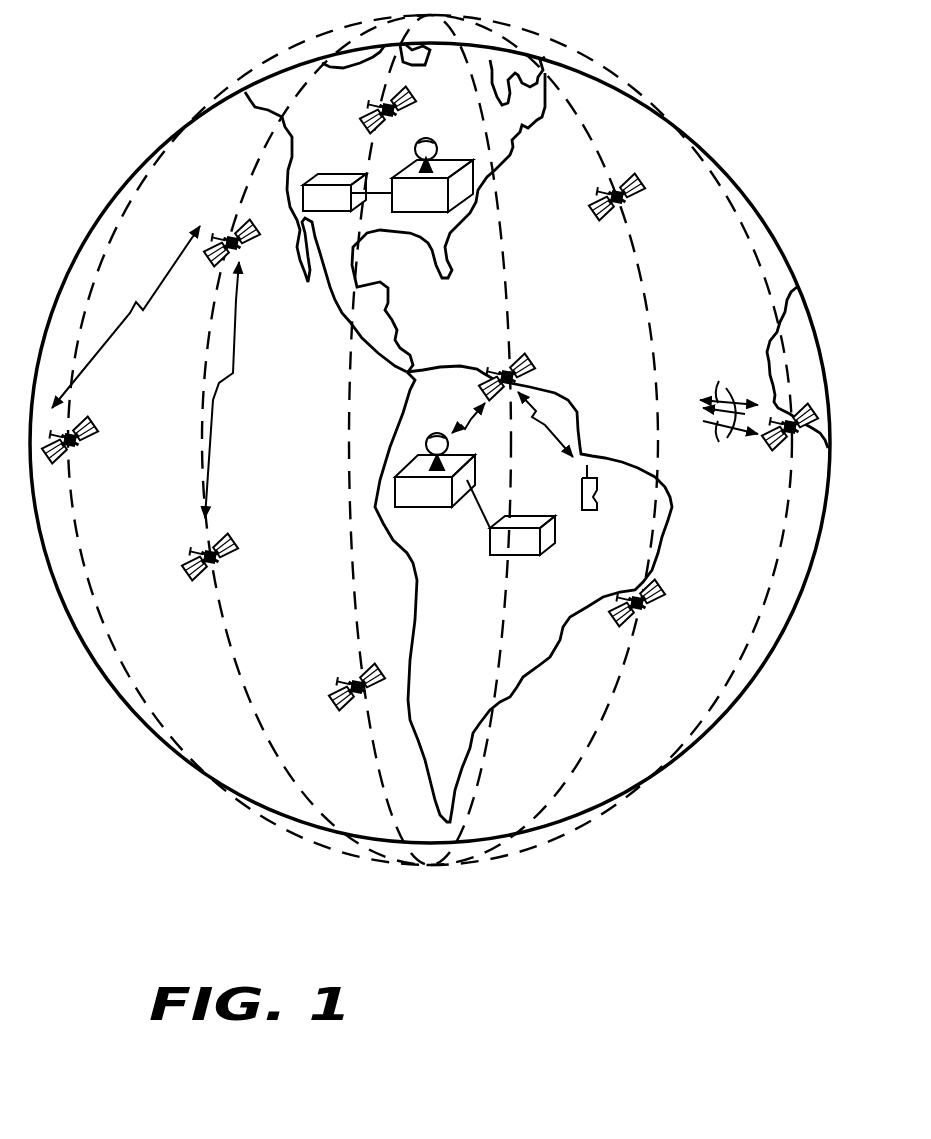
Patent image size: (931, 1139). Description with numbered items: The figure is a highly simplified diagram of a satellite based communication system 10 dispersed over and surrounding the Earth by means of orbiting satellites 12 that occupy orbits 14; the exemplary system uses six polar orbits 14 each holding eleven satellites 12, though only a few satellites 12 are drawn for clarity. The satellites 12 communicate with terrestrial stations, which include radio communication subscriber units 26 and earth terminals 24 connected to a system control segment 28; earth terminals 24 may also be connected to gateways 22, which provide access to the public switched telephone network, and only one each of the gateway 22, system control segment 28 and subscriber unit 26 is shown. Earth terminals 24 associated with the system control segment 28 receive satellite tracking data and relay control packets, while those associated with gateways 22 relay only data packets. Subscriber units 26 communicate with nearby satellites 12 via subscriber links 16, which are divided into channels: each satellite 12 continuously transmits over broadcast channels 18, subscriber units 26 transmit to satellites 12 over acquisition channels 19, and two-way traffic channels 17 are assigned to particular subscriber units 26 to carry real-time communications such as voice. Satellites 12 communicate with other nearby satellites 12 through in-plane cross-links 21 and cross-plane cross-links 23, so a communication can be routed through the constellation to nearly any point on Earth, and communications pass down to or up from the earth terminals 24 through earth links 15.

The satellite based communication system 10 is at (420, 962).
The satellite 12 is at (365, 133).
The orbit 14 is at (260, 165).
The earth link 15 is at (467, 417).
The subscriber link 16 is at (543, 410).
The traffic channel 17 is at (722, 388).
The broadcast channel 18 is at (710, 401).
The acquisition channel 19 is at (717, 426).
The in-plane cross-link 21 is at (217, 408).
The gateway 22 is at (523, 555).
The cross-plane cross-link 23 is at (140, 305).
The earth terminal 24 is at (453, 158).
The subscriber unit 26 is at (587, 511).
The system control segment 28 is at (315, 211).